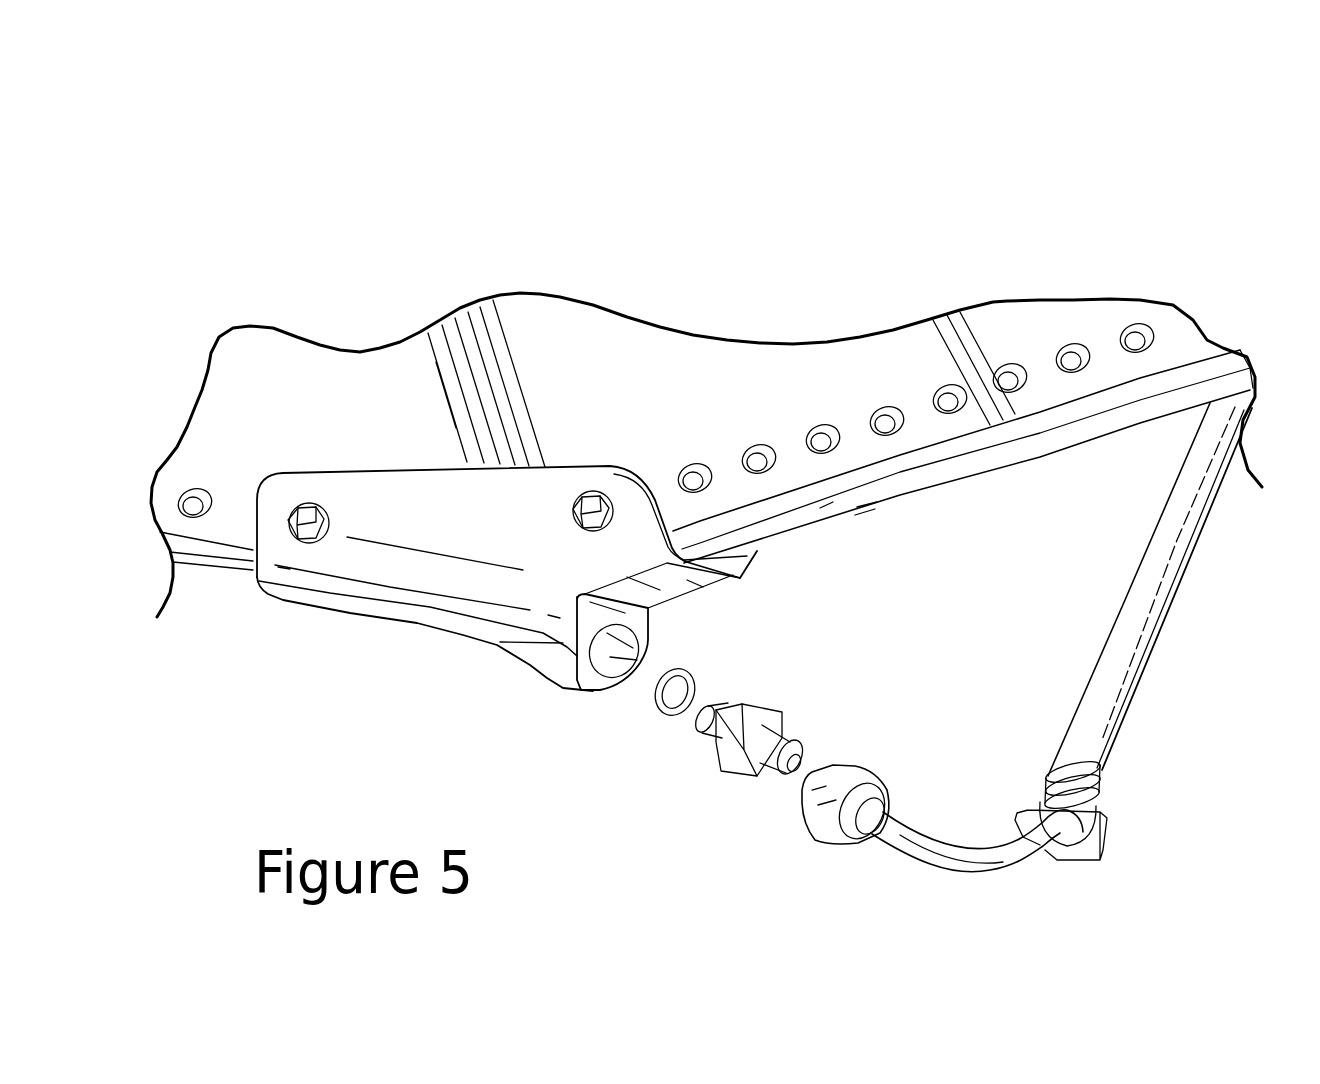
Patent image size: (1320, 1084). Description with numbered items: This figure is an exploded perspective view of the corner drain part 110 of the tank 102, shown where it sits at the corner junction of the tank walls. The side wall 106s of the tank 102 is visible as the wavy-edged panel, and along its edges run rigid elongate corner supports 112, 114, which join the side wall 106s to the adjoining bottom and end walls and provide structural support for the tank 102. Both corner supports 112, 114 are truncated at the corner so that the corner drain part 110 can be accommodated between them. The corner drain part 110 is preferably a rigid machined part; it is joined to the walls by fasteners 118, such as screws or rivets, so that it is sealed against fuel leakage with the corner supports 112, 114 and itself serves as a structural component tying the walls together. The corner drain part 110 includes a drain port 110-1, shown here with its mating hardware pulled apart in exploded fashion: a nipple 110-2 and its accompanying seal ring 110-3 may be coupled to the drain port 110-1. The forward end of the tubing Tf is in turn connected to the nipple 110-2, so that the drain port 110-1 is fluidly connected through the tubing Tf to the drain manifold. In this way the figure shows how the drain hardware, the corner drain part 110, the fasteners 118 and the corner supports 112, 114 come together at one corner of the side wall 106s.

The tank 102 is at (835, 262).
The side wall 106s is at (762, 388).
The corner drain part 110 is at (484, 539).
The drain port 110-1 is at (607, 658).
The nipple 110-2 is at (773, 722).
The seal ring 110-3 is at (661, 720).
The corner support 112 is at (210, 570).
The corner support 114 is at (937, 480).
The fasteners 118 is at (300, 527).
The tubing Tf is at (1128, 638).